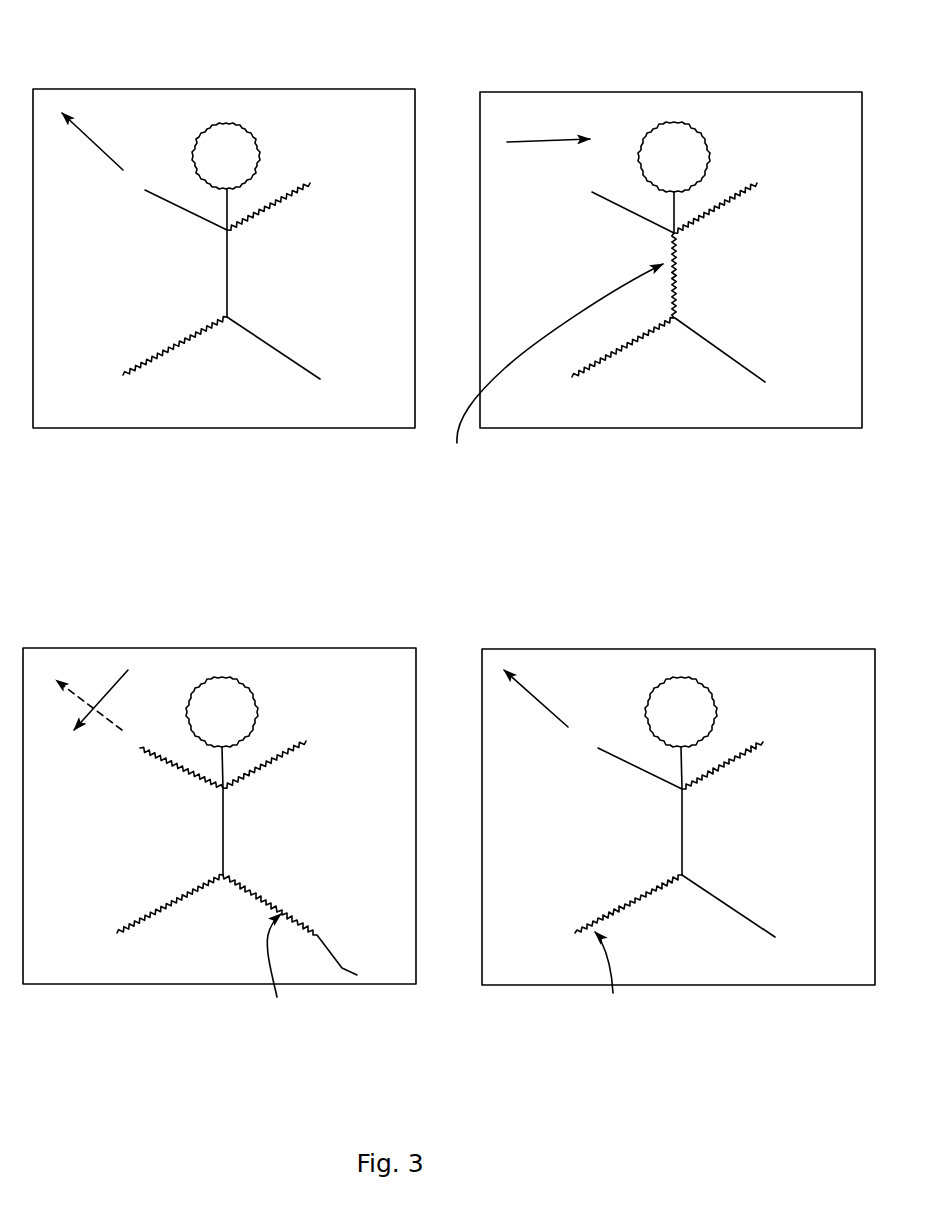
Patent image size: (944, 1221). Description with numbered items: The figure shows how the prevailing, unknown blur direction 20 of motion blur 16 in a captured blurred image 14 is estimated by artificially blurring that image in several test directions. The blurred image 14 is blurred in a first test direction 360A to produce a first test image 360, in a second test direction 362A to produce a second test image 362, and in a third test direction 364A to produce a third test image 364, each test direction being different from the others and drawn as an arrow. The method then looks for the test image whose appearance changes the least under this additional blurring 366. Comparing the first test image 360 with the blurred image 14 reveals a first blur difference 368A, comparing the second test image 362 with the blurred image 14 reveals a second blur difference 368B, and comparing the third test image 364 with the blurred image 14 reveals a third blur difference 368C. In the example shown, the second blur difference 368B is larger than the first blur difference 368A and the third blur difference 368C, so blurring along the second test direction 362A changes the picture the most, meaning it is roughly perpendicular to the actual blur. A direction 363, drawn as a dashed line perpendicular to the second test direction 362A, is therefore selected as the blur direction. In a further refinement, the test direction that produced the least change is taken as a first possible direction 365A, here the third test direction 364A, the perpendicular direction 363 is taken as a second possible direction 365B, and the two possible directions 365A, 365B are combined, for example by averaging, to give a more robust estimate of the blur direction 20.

The blurred image 14 is at (222, 431).
The motion blur 16 is at (210, 125).
The blur direction 20 is at (97, 140).
The first test image 360 is at (658, 433).
The first test direction 360A is at (548, 137).
The additional blurring 366 is at (672, 286).
The first blur difference 368A is at (542, 371).
The second test image 362 is at (202, 989).
The second test direction 362A is at (128, 672).
The direction perpendicular to second test direction 363 is at (78, 697).
The second possible direction 365B is at (70, 687).
The second blur difference 368B is at (285, 973).
The third test image 364 is at (750, 989).
The third test direction 364A is at (542, 698).
The first possible direction 365A is at (555, 708).
The third blur difference 368C is at (612, 980).